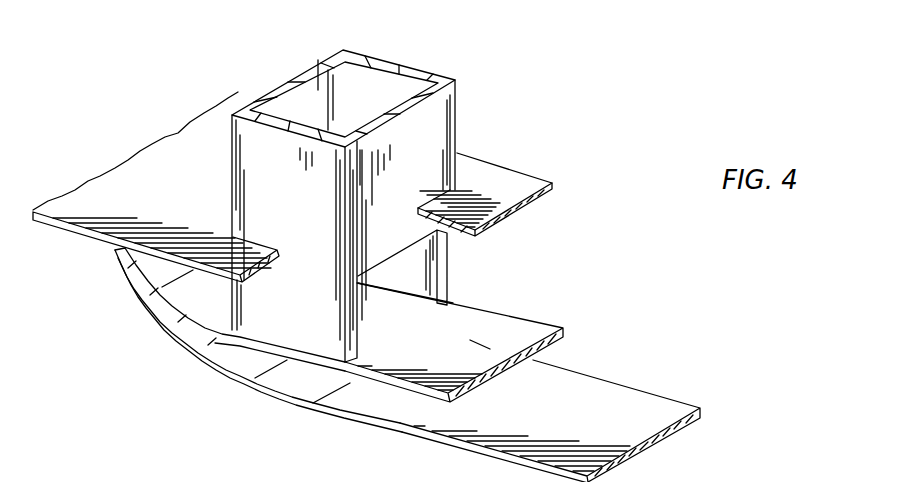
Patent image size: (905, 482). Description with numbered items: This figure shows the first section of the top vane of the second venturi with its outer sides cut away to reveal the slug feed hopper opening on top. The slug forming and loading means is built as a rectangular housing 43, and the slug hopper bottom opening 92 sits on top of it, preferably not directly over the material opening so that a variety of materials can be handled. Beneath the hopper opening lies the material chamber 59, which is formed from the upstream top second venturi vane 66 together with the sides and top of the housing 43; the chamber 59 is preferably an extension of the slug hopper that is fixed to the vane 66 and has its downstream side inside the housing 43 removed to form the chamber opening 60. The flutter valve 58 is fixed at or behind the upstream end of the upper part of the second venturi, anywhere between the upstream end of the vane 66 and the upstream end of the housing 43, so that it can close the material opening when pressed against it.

The slug hopper bottom opening 92 is at (367, 90).
The rectangular housing 43 is at (493, 178).
The chamber opening 60 is at (430, 273).
The upstream top second venturi vane 66 is at (507, 312).
The flutter valve 58 is at (606, 405).
The material chamber 59 is at (366, 306).